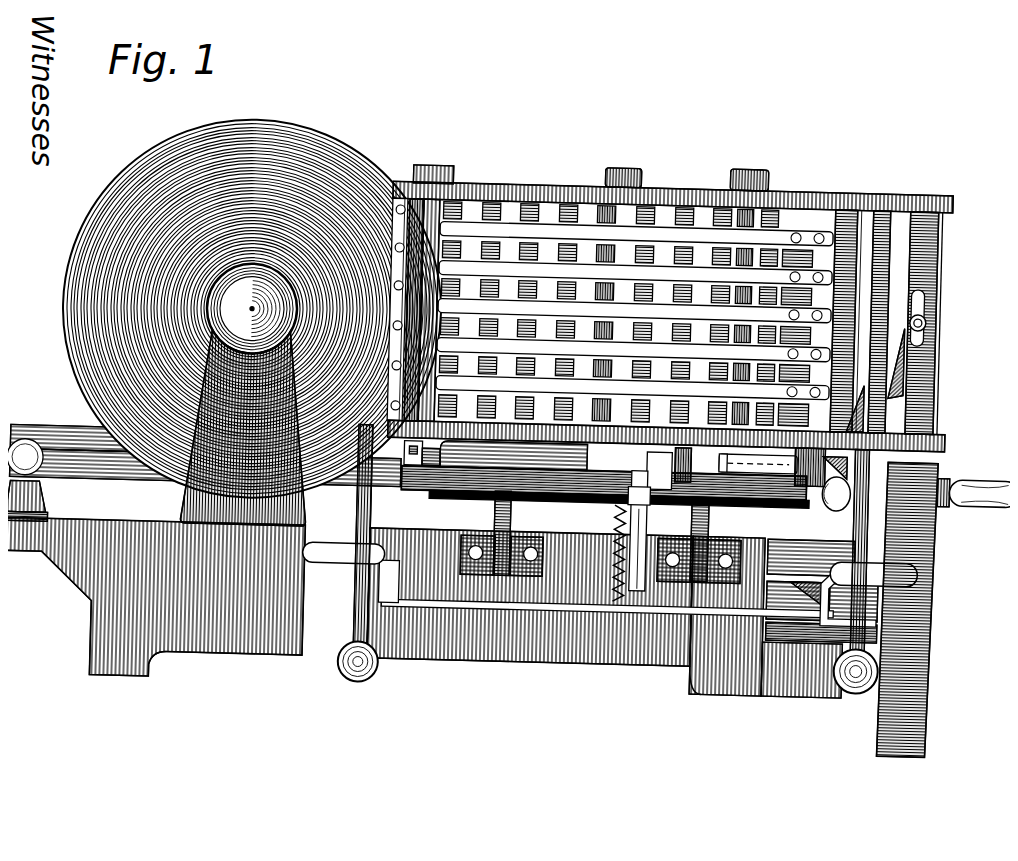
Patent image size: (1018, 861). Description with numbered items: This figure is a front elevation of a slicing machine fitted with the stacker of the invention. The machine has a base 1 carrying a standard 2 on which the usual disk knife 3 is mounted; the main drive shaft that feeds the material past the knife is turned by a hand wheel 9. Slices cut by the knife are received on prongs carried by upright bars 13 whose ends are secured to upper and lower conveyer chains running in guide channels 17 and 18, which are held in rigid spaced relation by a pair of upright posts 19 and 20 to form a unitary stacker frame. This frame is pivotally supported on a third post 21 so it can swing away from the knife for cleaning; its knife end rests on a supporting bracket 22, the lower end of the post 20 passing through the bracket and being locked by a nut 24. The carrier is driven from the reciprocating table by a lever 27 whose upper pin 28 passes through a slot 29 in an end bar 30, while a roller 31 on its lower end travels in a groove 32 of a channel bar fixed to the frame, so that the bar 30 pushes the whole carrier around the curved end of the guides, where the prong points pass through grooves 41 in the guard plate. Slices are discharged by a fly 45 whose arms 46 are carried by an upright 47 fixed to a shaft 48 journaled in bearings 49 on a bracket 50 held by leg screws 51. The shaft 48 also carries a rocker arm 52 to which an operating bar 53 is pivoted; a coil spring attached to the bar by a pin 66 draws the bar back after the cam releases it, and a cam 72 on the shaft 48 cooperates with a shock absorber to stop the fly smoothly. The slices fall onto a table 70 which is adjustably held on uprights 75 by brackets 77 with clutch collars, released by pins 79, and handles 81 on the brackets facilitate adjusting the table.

The base 1 is at (490, 655).
The standard 2 is at (214, 495).
The disk knife 3 is at (287, 137).
The hand wheel 9 is at (924, 628).
The upright bars 13 is at (556, 196).
The guide channel 17 is at (782, 179).
The guide channel 18 is at (926, 437).
The upright post 19 is at (609, 160).
The upright post 20 is at (420, 210).
The third post 21 is at (735, 158).
The supporting bracket 22 is at (399, 445).
The nut 24 is at (428, 464).
The lever 27 is at (892, 372).
The pin 28 is at (916, 310).
The slot 29 is at (915, 292).
The bar 30 is at (926, 240).
The roller 31 is at (905, 428).
The groove 32 is at (498, 452).
The grooves 41 is at (384, 282).
The fly 45 is at (843, 240).
The arms 46 is at (595, 270).
The upright 47 is at (810, 332).
The shaft 48 is at (730, 463).
The bearings 49 is at (780, 505).
The bracket 50 is at (699, 548).
The leg screws 51 is at (530, 556).
The rocker arm 52 is at (640, 480).
The operating bar 53 is at (609, 521).
The pin 66 is at (612, 498).
The table 70 is at (755, 640).
The cam 72 is at (760, 498).
The uprights 75 is at (352, 600).
The brackets 77 is at (390, 604).
The pins 79 is at (870, 612).
The handles 81 is at (310, 542).